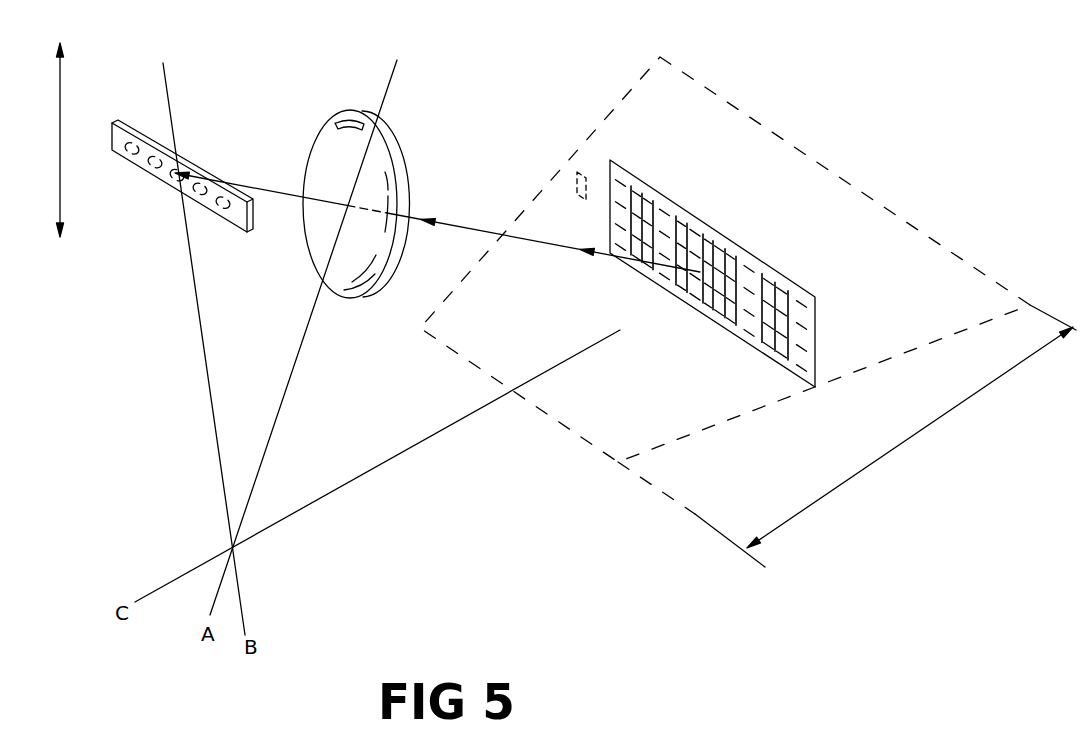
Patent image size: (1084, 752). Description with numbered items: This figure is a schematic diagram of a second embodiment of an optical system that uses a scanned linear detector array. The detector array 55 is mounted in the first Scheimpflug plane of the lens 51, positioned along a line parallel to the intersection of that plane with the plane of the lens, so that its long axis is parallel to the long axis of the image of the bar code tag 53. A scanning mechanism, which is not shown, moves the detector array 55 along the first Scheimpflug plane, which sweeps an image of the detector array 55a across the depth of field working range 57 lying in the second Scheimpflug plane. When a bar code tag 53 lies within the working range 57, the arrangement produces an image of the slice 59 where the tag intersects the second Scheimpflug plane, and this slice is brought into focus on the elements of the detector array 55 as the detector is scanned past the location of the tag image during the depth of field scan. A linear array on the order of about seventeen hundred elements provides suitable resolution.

The lens 51 is at (318, 136).
The bar code tag 53 is at (637, 178).
The detector array 55 is at (201, 206).
The image plane of detector array 55a is at (798, 142).
The depth of field working range 57 is at (808, 513).
The slice 59 is at (582, 194).